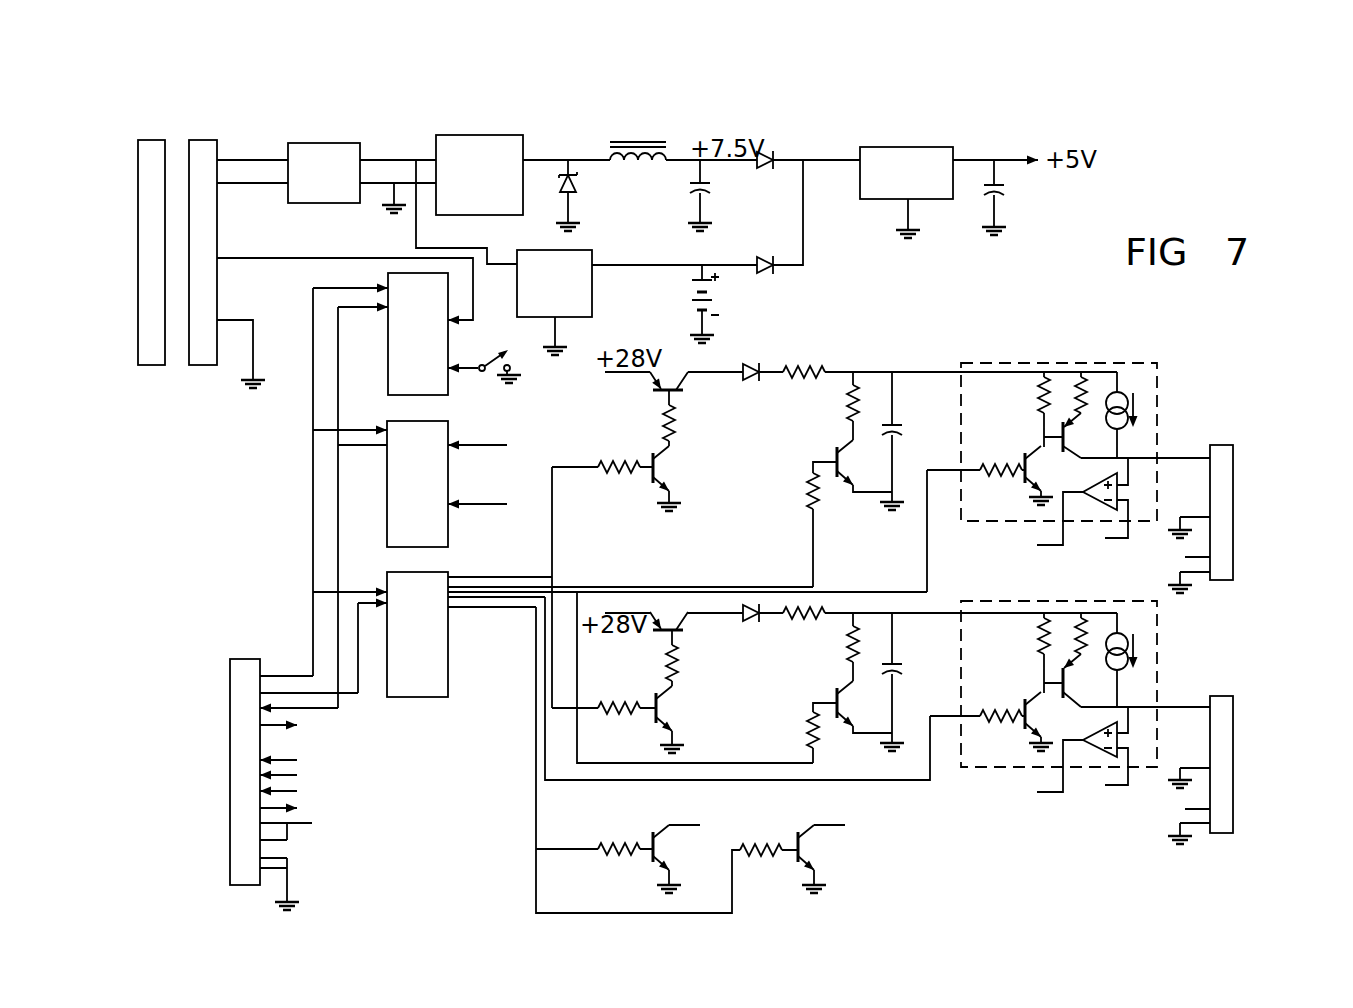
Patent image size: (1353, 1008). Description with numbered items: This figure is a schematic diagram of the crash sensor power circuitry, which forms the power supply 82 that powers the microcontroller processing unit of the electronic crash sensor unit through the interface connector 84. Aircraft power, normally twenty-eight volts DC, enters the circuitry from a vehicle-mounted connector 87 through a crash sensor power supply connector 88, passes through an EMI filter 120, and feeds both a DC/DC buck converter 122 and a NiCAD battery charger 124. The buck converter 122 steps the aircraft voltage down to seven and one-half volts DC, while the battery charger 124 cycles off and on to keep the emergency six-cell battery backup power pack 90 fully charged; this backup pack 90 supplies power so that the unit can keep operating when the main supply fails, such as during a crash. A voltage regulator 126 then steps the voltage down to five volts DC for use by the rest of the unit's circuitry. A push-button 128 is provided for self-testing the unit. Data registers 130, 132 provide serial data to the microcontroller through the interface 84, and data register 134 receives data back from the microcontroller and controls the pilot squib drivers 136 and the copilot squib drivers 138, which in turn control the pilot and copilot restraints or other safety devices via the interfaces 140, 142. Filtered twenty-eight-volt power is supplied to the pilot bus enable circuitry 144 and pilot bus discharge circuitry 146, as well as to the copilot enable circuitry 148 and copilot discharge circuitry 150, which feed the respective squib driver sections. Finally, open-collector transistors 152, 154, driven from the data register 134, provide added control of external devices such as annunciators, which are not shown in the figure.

The power supply 82 is at (797, 123).
The interface connector 84 is at (240, 662).
The vehicle-mounted connector 87 is at (152, 363).
The crash sensor power supply connector 88 is at (206, 363).
The battery backup power pack 90 is at (730, 298).
The EMI filter 120 is at (330, 143).
The DC/DC buck converter 122 is at (463, 140).
The NiCAD battery charger 124 is at (582, 255).
The voltage regulator 126 is at (915, 155).
The push-button 128 is at (524, 388).
The data register 130 is at (442, 388).
The data register 132 is at (440, 490).
The data register 134 is at (417, 688).
The pilot squib drivers 136 is at (1070, 363).
The copilot squib drivers 138 is at (1013, 770).
The interface 140 is at (1233, 497).
The interface 142 is at (1225, 762).
The pilot bus enable circuitry 144 is at (692, 422).
The pilot bus discharge circuitry 146 is at (864, 357).
The copilot enable circuitry 148 is at (700, 661).
The copilot discharge circuitry 150 is at (820, 645).
The open-collector transistor 152 is at (685, 843).
The open-collector transistor 154 is at (828, 847).